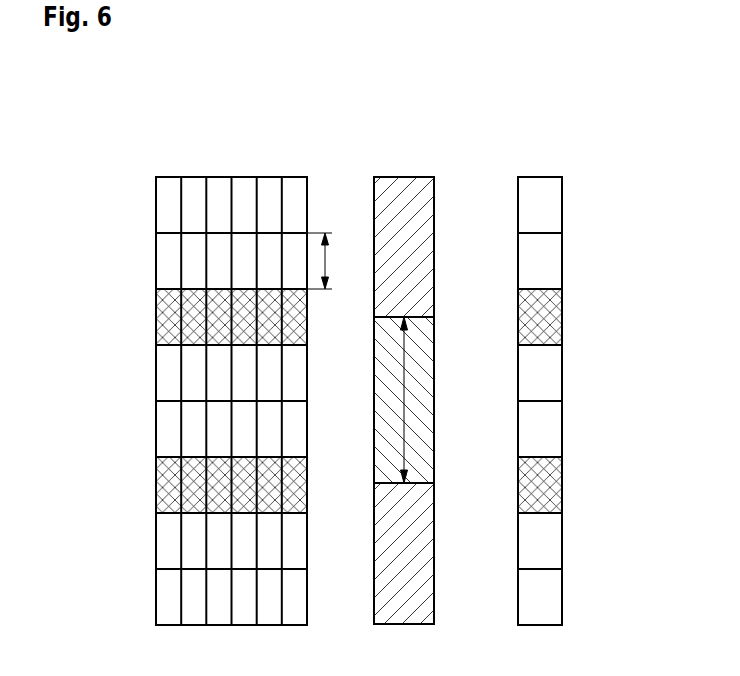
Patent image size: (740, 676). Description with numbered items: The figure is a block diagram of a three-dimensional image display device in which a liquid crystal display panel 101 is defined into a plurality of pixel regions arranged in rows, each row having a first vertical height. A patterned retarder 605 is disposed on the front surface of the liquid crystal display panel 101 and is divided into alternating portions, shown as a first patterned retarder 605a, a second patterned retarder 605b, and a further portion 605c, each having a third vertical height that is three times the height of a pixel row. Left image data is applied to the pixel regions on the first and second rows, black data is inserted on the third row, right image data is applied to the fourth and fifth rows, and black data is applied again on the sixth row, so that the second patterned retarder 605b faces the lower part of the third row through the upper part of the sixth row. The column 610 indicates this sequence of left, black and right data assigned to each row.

The liquid crystal display panel 101 is at (233, 163).
The patterned retarder 605 is at (405, 163).
The first patterned retarder 605a is at (434, 238).
The second patterned retarder 605b is at (434, 398).
The third data portion 605c is at (434, 548).
The data signal column 610 is at (540, 163).